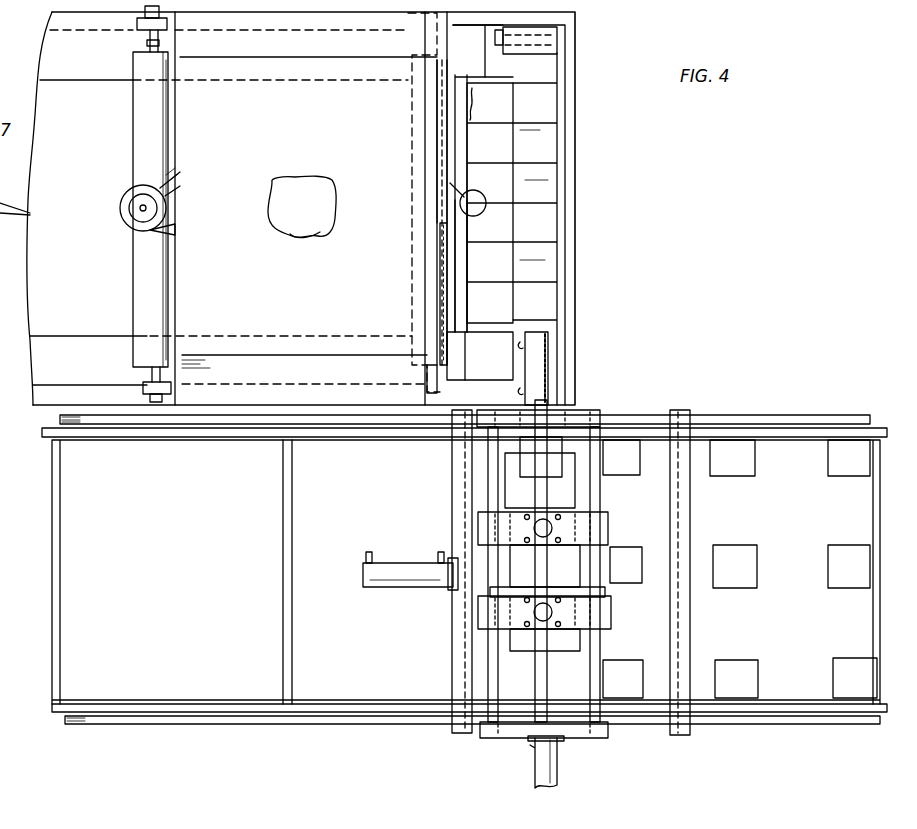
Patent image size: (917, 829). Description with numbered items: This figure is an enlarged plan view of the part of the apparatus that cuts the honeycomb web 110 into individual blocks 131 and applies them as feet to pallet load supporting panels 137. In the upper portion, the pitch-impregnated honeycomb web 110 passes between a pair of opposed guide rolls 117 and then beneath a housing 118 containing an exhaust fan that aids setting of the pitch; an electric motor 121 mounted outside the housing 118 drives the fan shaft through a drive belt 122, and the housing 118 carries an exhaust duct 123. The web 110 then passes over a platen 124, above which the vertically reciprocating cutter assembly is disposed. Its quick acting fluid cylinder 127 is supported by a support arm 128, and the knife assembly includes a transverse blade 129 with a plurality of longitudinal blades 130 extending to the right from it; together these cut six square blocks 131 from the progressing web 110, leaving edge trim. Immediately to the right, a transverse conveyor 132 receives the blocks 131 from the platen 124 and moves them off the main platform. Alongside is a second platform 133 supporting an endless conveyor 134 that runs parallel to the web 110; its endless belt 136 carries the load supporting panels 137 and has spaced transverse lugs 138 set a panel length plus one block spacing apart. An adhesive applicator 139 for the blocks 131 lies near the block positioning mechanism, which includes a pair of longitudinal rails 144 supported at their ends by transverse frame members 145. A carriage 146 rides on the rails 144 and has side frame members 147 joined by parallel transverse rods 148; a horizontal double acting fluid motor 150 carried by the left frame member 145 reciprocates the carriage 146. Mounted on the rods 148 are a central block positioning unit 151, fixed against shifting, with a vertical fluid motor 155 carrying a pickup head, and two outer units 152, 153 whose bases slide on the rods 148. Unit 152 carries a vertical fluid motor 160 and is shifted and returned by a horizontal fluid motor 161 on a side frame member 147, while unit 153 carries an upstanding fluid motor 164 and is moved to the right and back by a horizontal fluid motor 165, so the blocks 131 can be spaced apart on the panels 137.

The honeycomb web 110 is at (236, 338).
The guide rolls 117 is at (150, 268).
The housing 118 is at (300, 375).
The electric motor 121 is at (121, 205).
The drive belt 122 is at (160, 196).
The exhaust duct 123 is at (305, 185).
The platen 124 is at (473, 363).
The quick acting fluid cylinder 127 is at (460, 203).
The support arm 128 is at (445, 140).
The transverse blade 129 is at (462, 293).
The longitudinal blades 130 is at (500, 310).
The blocks 131 is at (545, 140).
The transverse conveyor 132 is at (565, 60).
The platform 133 is at (377, 726).
The endless conveyor 134 is at (746, 413).
The endless belt 136 is at (78, 680).
The load supporting panels 137 is at (302, 715).
The lugs 138 is at (62, 518).
The adhesive applicator 139 is at (574, 462).
The rails 144 is at (680, 418).
The transverse frame members 145 is at (455, 500).
The carriage 146 is at (612, 503).
The side frame members 147 is at (580, 415).
The transverse rods 148 is at (490, 685).
The extensible fluid motor 150 is at (387, 578).
The central block positioning unit 151 is at (612, 597).
The outer block positioning unit 152 is at (620, 625).
The outer block positioning unit 153 is at (614, 518).
The extensible fluid motor 155 is at (533, 573).
The fluid motor 160 is at (530, 612).
The fluid motor 161 is at (555, 755).
The fluid motor 164 is at (530, 530).
The fluid motor 165 is at (548, 360).